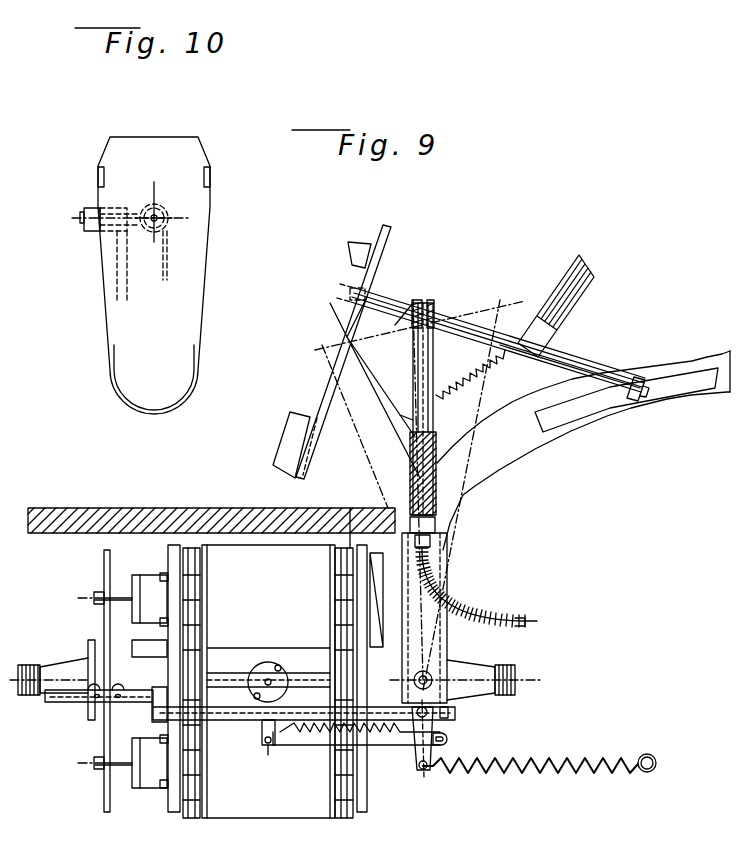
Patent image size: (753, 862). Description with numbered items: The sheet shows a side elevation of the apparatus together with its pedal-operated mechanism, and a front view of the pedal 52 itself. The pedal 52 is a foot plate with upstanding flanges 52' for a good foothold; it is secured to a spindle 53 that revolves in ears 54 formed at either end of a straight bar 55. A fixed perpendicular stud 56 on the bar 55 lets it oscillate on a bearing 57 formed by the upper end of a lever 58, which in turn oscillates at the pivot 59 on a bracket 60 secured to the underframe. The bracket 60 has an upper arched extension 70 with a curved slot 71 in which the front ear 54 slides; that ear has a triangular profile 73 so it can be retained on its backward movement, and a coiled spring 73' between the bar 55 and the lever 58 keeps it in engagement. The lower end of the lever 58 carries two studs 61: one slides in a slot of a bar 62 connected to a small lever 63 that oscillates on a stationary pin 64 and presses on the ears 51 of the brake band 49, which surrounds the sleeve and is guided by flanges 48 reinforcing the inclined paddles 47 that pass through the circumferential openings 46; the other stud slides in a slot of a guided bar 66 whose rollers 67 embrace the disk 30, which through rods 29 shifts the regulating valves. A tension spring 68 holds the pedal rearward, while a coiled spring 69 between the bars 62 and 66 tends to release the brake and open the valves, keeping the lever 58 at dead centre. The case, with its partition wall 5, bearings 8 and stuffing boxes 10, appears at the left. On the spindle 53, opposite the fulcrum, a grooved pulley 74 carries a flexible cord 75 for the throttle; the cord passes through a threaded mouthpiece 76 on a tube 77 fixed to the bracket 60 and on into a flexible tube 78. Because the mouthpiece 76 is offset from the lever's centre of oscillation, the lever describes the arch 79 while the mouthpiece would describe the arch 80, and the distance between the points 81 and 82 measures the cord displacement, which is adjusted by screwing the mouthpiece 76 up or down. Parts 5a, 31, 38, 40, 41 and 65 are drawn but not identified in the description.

In FIG. 9, the transverse partition wall 5 is at (173, 556).
In FIG. 9, the bracket 5a is at (639, 378).
In FIG. 9, the bearings 8 is at (386, 648).
In FIG. 9, the stuffing boxes 10 is at (95, 632).
In FIG. 9, the rod 29 is at (117, 595).
In FIG. 9, the disk 30 is at (103, 556).
In FIG. 9, the bracket block 31 is at (133, 577).
In FIG. 9, the lower bracket 38 is at (133, 607).
In FIG. 9, the block 40 is at (152, 690).
In FIG. 9, the shaft cone 41 is at (490, 668).
In FIG. 9, the circumferential opening 46 is at (349, 508).
In FIG. 9, the paddles 47 is at (335, 580).
In FIG. 9, the flanges 48 is at (192, 550).
In FIG. 9, the brake band 49 is at (260, 523).
In FIG. 9, the ears 51 is at (310, 672).
In FIG. 10, the pedal 52 is at (154, 264).
In FIG. 9, the pedal 52 is at (445, 352).
In FIG. 10, the upstanding flanges 52' is at (154, 274).
In FIG. 9, the upstanding flanges 52' is at (313, 355).
In FIG. 9, the spindle 53 is at (470, 323).
In FIG. 9, the ears 54 is at (414, 300).
In FIG. 9, the straight bar 55 is at (575, 368).
In FIG. 10, the fixed perpendicular stud 56 is at (80, 218).
In FIG. 10, the bearing 57 is at (98, 229).
In FIG. 10, the lever 58 is at (116, 280).
In FIG. 9, the lever 58 is at (400, 415).
In FIG. 9, the pivot 59 is at (433, 676).
In FIG. 9, the bracket 60 is at (440, 551).
In FIG. 9, the studs 61 is at (448, 738).
In FIG. 9, the bar 62 is at (415, 745).
In FIG. 9, the small lever 63 is at (265, 746).
In FIG. 9, the stationary pin 64 is at (266, 662).
In FIG. 9, the pin 65 is at (280, 665).
In FIG. 9, the bar 66 is at (222, 721).
In FIG. 9, the rollers 67 is at (112, 688).
In FIG. 9, the tension spring 68 is at (548, 760).
In FIG. 9, the coiled spring 69 is at (318, 738).
In FIG. 9, the upper arched extension 70 is at (530, 450).
In FIG. 9, the curved slot 71 is at (690, 372).
In FIG. 9, the triangular profile 73 is at (649, 417).
In FIG. 9, the coiled spring 73' is at (470, 374).
In FIG. 9, the grooved pulley 74 is at (437, 298).
In FIG. 9, the flexible cord 75 is at (413, 376).
In FIG. 9, the mouthpiece 76 is at (411, 447).
In FIG. 9, the tube 77 is at (440, 516).
In FIG. 9, the flexible tube 78 is at (628, 402).
In FIG. 9, the arch 79 is at (352, 296).
In FIG. 9, the arch 80 is at (397, 328).
In FIG. 9, the point 81 is at (343, 332).
In FIG. 9, the point 82 is at (345, 339).